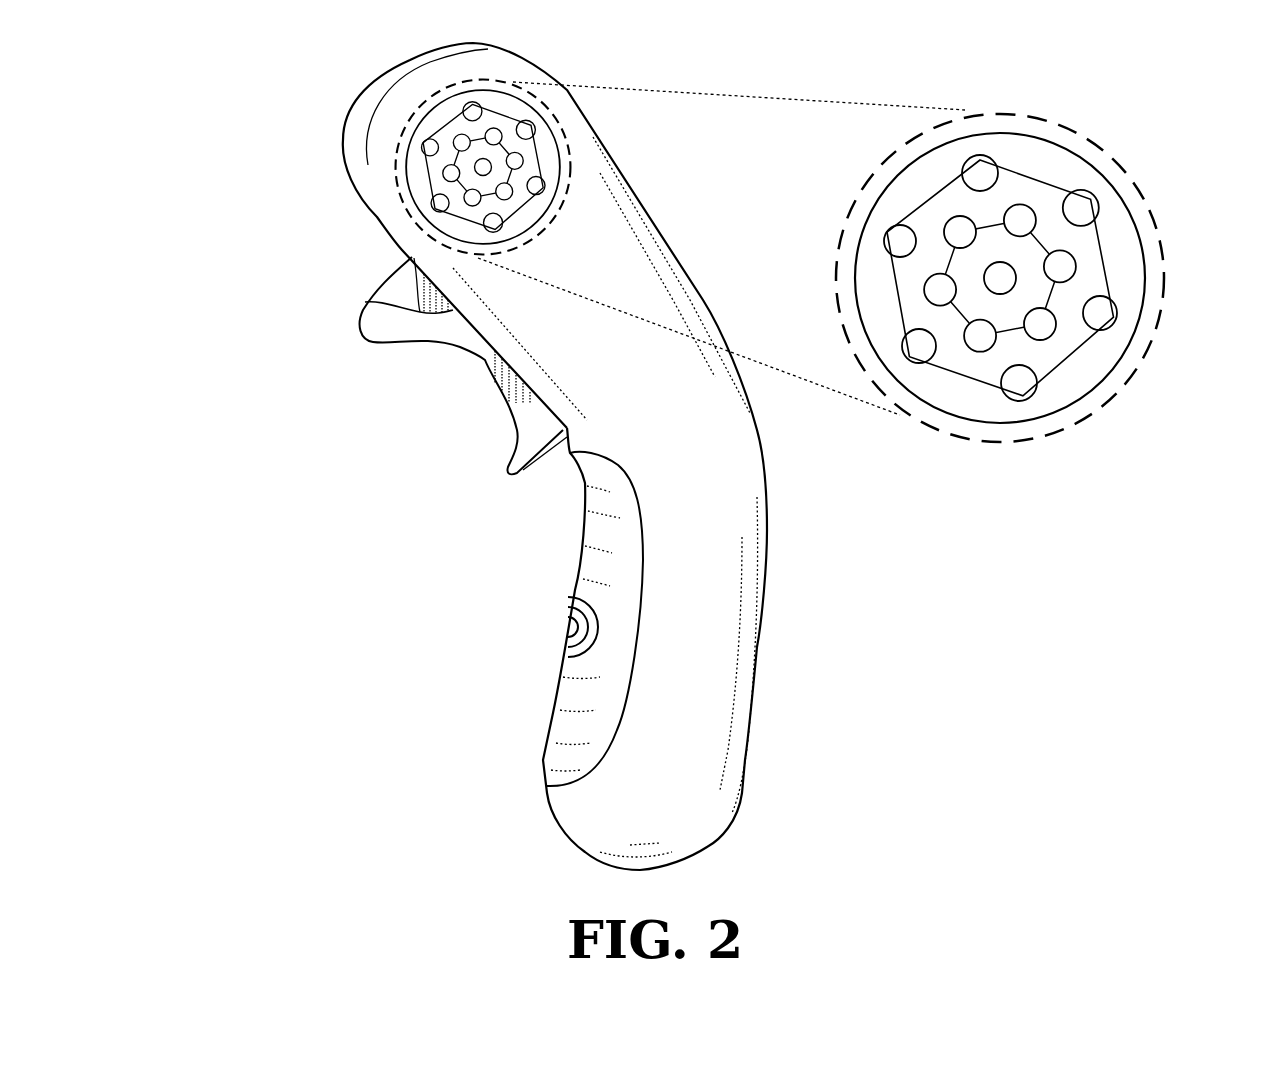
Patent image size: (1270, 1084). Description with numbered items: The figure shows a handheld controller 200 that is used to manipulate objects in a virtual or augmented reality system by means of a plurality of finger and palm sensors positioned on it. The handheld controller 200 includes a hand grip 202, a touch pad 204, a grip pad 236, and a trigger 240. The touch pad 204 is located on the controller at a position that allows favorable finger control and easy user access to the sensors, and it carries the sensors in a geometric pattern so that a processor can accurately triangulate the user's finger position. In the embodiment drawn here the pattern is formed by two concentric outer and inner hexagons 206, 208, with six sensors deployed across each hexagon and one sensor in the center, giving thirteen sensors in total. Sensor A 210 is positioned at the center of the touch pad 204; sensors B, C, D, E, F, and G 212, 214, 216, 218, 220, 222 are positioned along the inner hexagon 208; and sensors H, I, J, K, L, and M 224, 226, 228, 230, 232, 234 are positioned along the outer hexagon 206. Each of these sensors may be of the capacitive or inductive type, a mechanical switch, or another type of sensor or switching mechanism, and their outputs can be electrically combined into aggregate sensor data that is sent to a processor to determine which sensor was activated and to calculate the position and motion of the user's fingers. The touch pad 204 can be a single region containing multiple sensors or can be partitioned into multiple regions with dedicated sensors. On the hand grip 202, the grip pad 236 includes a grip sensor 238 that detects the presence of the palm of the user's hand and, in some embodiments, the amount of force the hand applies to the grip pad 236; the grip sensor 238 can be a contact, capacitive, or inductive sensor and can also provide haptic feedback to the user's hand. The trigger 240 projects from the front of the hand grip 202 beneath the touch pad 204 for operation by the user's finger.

The handheld controller 200 is at (232, 166).
The hand grip 202 is at (760, 676).
The touch pad 204 is at (396, 140).
The outer hexagon 206 is at (931, 266).
The inner hexagon 208 is at (1040, 326).
The sensor A 210 is at (1002, 277).
The sensor B 212 is at (1021, 218).
The sensor C 214 is at (899, 242).
The sensor D 216 is at (938, 288).
The sensor E 218 is at (979, 338).
The sensor F 220 is at (1060, 383).
The sensor G 222 is at (1062, 266).
The sensor H 224 is at (981, 170).
The sensor I 226 is at (958, 230).
The sensor J 228 is at (919, 348).
The sensor K 230 is at (1018, 385).
The sensor L 232 is at (1100, 313).
The sensor M 234 is at (1082, 207).
The grip pad 236 is at (556, 722).
The grip sensor 238 is at (566, 627).
The trigger 240 is at (513, 433).